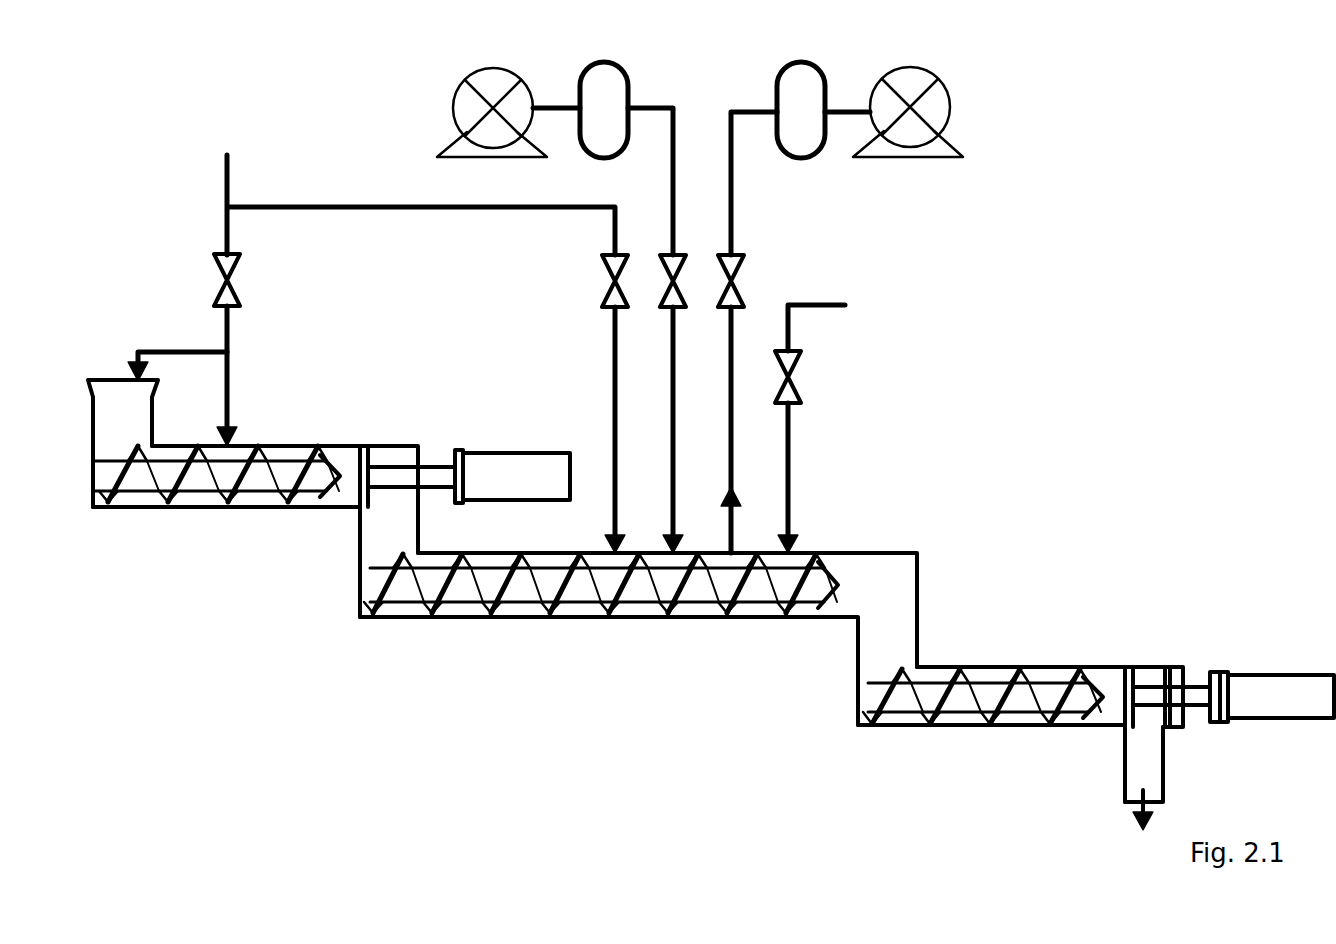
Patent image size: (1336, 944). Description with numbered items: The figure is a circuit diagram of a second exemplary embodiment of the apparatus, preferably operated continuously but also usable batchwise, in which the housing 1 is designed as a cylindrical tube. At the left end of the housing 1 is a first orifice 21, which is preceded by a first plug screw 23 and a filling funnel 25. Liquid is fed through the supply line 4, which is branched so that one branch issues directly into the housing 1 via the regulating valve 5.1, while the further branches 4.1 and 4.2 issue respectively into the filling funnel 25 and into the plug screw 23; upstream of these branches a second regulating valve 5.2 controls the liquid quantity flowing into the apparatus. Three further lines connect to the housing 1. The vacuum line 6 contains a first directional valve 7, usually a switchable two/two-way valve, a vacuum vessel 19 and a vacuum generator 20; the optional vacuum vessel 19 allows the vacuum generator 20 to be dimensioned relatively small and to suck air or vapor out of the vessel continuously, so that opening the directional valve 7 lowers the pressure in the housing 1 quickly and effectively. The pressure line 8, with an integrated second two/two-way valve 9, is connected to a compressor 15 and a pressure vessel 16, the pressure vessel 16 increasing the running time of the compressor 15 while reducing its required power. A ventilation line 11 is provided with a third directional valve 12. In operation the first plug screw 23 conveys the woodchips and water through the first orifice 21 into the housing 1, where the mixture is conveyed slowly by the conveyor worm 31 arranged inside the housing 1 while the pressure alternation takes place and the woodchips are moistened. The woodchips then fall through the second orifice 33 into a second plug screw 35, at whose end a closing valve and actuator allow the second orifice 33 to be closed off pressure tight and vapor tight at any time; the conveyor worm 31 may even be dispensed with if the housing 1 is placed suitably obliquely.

The housing 1 is at (585, 620).
The supply line 4 is at (222, 172).
The branch of the supply line 4.1 is at (135, 350).
The branch of the supply line 4.2 is at (232, 386).
The regulating valve 5.1 is at (608, 282).
The second regulating valve 5.2 is at (222, 277).
The vacuum line 6 is at (733, 428).
The first directional valve 7 is at (740, 280).
The pressure line 8 is at (676, 428).
The second 2/2-way valve 9 is at (682, 266).
The ventilation line 11 is at (825, 308).
The third directional valve 12 is at (796, 372).
The compressor 15 is at (460, 88).
The pressure vessel 16 is at (603, 158).
The vacuum vessel 19 is at (800, 158).
The vacuum generator 20 is at (910, 78).
The first orifice 21 is at (357, 538).
The first plug screw 23 is at (143, 508).
The filling funnel 25 is at (107, 426).
The conveyor worm 31 is at (450, 602).
The second orifice 33 is at (920, 621).
The second plug screw 35 is at (955, 727).